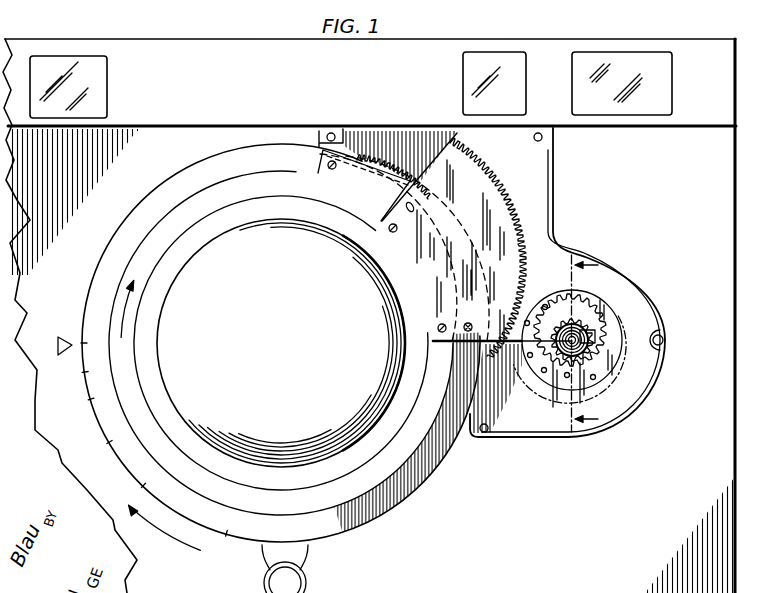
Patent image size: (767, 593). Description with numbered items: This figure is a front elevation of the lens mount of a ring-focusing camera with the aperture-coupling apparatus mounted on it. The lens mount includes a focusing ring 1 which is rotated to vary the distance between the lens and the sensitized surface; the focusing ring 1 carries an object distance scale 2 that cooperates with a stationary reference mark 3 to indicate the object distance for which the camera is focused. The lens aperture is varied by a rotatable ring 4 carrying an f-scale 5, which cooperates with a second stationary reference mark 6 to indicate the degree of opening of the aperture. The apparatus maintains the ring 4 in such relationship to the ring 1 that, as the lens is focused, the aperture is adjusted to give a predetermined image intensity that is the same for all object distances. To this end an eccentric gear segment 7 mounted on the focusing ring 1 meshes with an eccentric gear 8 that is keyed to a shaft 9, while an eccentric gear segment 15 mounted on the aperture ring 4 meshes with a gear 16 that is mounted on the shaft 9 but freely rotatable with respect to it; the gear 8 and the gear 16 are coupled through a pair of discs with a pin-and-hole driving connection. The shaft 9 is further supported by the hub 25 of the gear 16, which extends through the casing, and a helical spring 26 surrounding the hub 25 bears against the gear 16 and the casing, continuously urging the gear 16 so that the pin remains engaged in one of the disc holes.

The focusing ring 1 is at (417, 487).
The object distance scale 2 is at (117, 440).
The stationary reference mark 3 is at (60, 345).
The rotatable ring 4 is at (197, 230).
The f-scale 5 is at (222, 205).
The stationary reference mark 6 is at (281, 194).
The eccentric gear segment 7 is at (380, 160).
The eccentric gear 8 is at (612, 387).
The shaft 9 is at (593, 347).
The eccentric gear segment 15 is at (487, 175).
The gear 16 is at (590, 308).
The hub 25 is at (597, 330).
The helical spring 26 is at (596, 338).